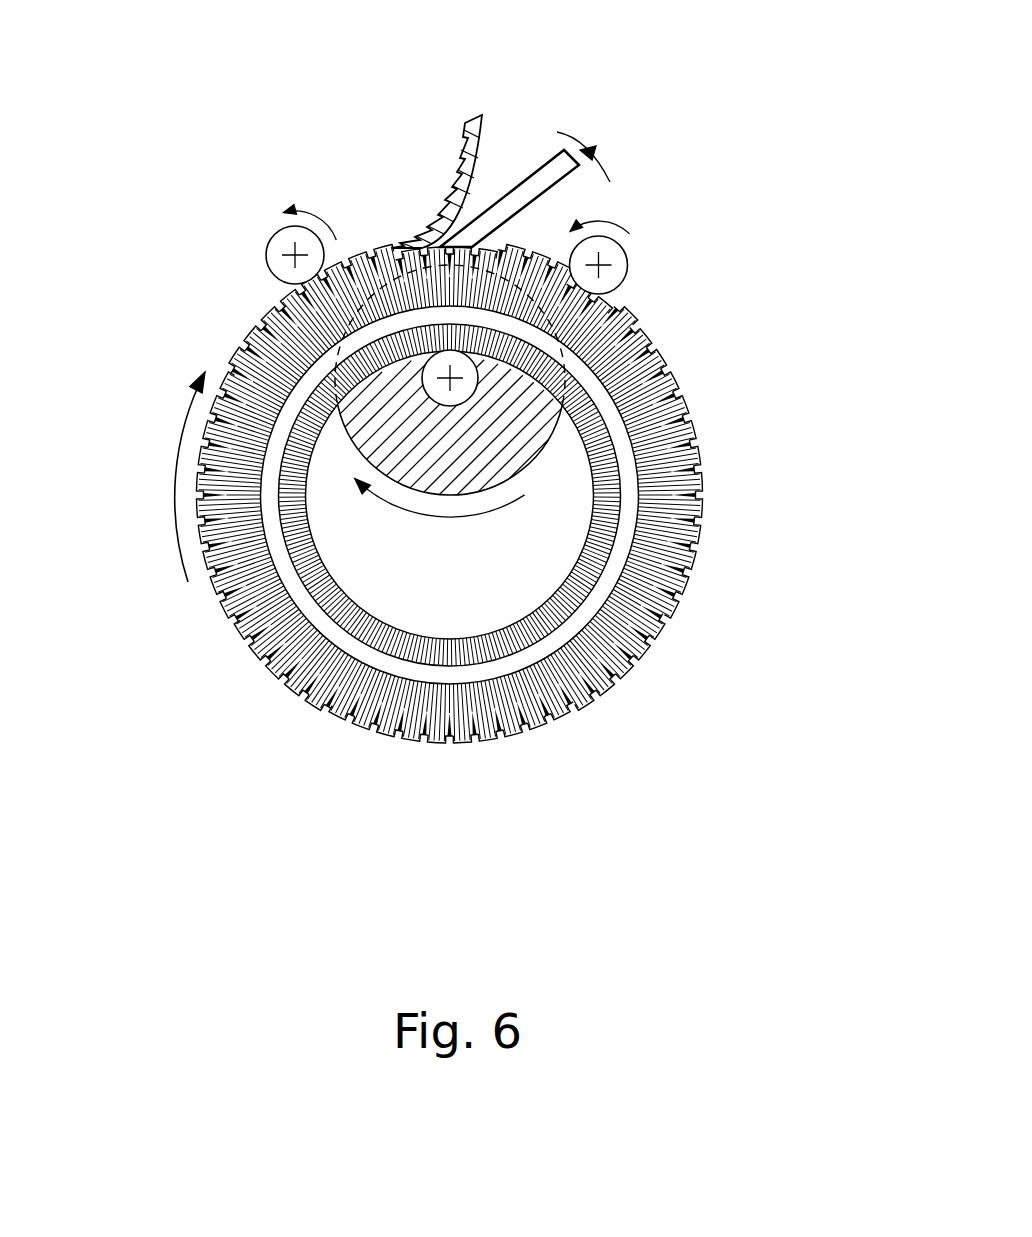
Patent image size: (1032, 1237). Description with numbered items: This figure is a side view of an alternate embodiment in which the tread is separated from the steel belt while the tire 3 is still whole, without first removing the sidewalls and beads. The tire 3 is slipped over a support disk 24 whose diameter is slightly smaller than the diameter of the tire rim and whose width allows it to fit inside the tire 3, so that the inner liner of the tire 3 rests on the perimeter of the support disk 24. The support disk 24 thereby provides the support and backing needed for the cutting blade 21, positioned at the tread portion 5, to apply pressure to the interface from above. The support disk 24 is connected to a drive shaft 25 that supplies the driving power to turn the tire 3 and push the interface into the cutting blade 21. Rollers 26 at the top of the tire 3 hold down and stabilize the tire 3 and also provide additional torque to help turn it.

The tire 3 is at (625, 725).
The tread portion 5 is at (469, 153).
The cutting blade 21 is at (528, 188).
The support disk 24 is at (528, 469).
The drive shaft 25 is at (485, 395).
The rollers 26 is at (265, 245).